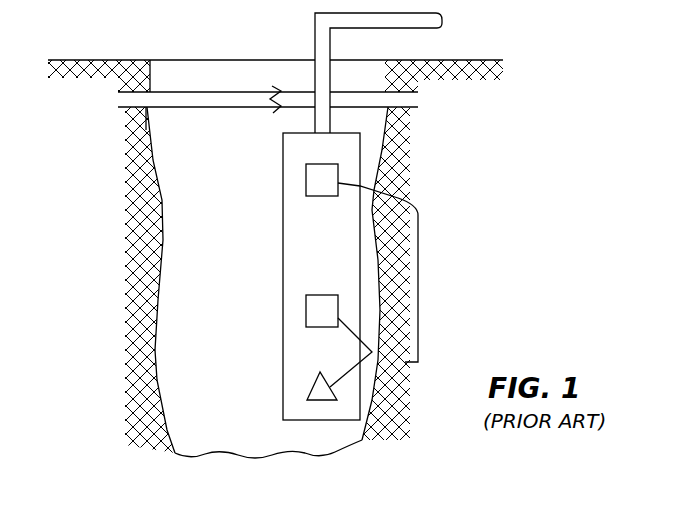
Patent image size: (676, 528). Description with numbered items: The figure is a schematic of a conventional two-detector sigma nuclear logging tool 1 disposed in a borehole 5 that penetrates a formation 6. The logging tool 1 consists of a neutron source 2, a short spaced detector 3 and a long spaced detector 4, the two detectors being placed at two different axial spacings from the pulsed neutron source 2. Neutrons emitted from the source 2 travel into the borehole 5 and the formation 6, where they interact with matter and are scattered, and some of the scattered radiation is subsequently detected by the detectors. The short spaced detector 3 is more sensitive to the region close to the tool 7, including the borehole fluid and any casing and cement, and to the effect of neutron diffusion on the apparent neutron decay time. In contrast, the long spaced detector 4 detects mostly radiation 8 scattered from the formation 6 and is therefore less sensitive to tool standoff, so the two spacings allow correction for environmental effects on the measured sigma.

The logging tool 1 is at (310, 418).
The neutron source 2 is at (312, 390).
The short spaced (SS) detector 3 is at (315, 312).
The long spaced (LS) detector 4 is at (306, 184).
The borehole 5 is at (200, 232).
The formation 6 is at (293, 102).
The region close to the tool 7 is at (355, 372).
The radiation 8 is at (420, 258).